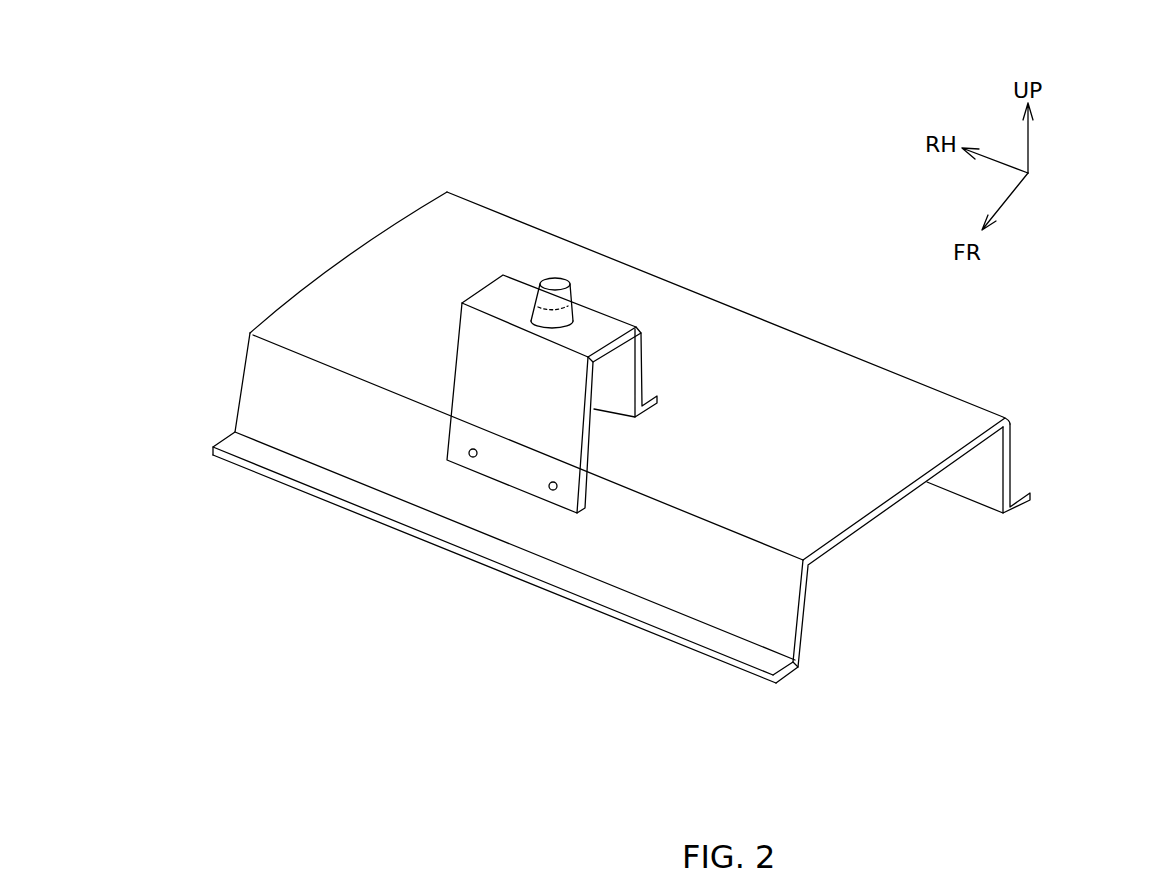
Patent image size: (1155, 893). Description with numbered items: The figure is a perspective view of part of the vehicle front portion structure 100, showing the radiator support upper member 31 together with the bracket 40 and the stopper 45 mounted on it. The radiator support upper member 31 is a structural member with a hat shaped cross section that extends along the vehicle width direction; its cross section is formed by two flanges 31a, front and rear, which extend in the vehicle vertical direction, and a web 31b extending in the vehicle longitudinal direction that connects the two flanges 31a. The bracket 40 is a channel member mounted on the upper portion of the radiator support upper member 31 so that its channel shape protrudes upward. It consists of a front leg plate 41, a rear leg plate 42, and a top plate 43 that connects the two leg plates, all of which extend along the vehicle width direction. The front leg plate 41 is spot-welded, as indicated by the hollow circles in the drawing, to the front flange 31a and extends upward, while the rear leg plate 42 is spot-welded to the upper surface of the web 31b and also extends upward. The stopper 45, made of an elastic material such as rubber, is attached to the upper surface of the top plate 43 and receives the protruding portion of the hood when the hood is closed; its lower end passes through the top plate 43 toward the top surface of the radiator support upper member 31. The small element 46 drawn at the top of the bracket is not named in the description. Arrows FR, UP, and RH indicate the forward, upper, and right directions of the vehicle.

The vehicle front portion structure 100 is at (230, 168).
The radiator support upper member 31 is at (902, 377).
The flange 31a is at (1013, 465).
The web 31b is at (943, 423).
The bracket 40 is at (643, 357).
The front leg plate 41 is at (590, 423).
The rear leg plate 42 is at (643, 383).
The top plate 43 is at (600, 330).
The stopper 45 is at (575, 296).
The pin 46 is at (555, 282).